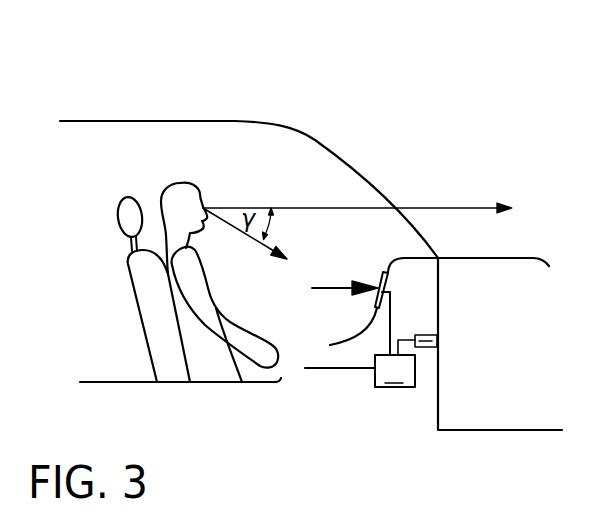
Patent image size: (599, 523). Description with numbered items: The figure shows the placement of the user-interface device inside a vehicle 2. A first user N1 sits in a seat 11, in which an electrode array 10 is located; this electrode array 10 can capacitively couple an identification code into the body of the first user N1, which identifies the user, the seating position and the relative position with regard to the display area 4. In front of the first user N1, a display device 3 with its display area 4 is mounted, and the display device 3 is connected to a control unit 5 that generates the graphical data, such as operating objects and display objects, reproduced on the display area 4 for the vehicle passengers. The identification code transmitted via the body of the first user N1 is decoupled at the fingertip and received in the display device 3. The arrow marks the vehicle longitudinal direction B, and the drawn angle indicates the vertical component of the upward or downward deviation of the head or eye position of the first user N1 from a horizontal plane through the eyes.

The vehicle 2 is at (311, 106).
The display device 3 is at (385, 283).
The display area 4 is at (335, 289).
The control unit 5 is at (360, 363).
The electrode array 10 is at (433, 337).
The seat 11 is at (162, 338).
The first user N1 is at (178, 295).
The vehicle longitudinal direction B is at (371, 210).